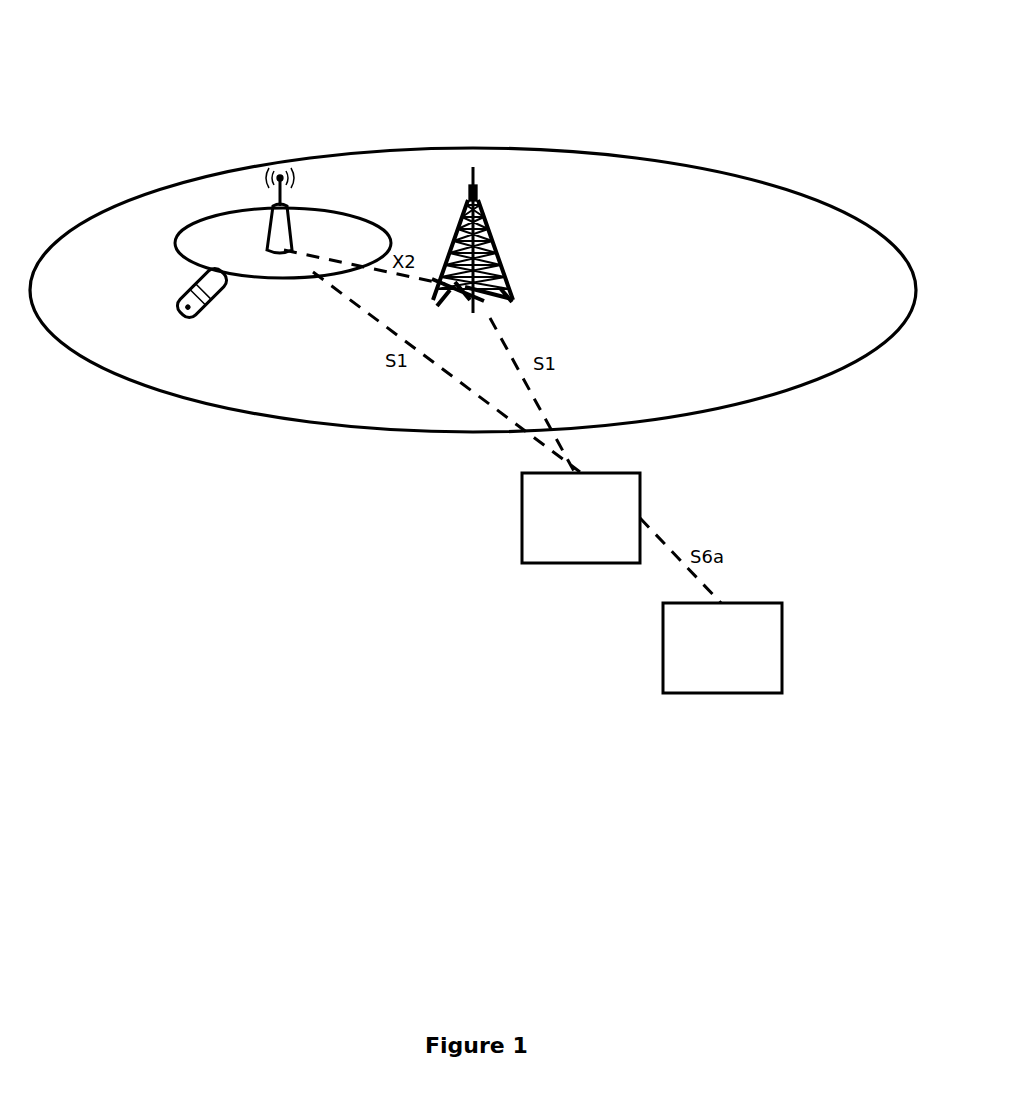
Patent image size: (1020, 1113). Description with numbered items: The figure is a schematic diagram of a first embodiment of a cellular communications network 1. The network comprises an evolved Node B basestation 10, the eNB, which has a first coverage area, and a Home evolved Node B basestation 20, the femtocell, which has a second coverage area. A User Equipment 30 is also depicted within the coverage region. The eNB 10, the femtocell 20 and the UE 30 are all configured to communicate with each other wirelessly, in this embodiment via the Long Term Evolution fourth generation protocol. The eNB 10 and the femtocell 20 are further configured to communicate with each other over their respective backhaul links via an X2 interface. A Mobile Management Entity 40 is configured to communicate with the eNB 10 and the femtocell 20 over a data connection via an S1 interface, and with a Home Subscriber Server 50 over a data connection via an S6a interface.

The cellular communications network 1 is at (751, 46).
The evolved Node B basestation 10 is at (487, 248).
The Home evolved Node B basestation 20 is at (273, 213).
The User Equipment 30 is at (182, 312).
The Mobile Management Entity 40 is at (640, 484).
The Home Subscriber Server 50 is at (782, 613).